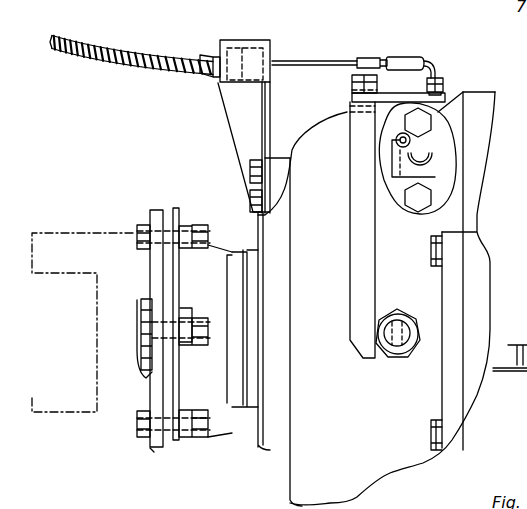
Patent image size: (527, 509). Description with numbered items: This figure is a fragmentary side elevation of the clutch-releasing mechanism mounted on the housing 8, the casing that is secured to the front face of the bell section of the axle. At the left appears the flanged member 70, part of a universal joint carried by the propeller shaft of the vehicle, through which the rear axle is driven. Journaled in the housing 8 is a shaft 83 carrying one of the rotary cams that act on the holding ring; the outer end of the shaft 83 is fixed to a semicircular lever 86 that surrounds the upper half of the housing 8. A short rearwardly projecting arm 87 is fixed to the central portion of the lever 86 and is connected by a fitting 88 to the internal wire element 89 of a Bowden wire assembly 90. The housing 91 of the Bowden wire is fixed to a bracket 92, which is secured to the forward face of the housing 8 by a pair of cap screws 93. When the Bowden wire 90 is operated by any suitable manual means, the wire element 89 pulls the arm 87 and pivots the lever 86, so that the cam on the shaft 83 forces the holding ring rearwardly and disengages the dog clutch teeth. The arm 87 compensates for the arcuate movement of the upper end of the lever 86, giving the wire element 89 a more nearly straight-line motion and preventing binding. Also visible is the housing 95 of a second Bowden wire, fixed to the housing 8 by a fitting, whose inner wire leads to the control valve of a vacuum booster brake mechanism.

The housing 8 is at (288, 481).
The flanged member 70 is at (152, 448).
The shaft 83 is at (390, 358).
The semicircular lever 86 is at (350, 256).
The rearwardly projecting arm 87 is at (386, 99).
The fitting 88 is at (440, 83).
The internal wire element 89 is at (330, 63).
The Bowden wire assembly 90 is at (135, 45).
The housing of the Bowden wire 91 is at (168, 52).
The bracket 92 is at (226, 108).
The cap screws 93 is at (250, 199).
The housing of a Bowden wire 95 is at (432, 140).